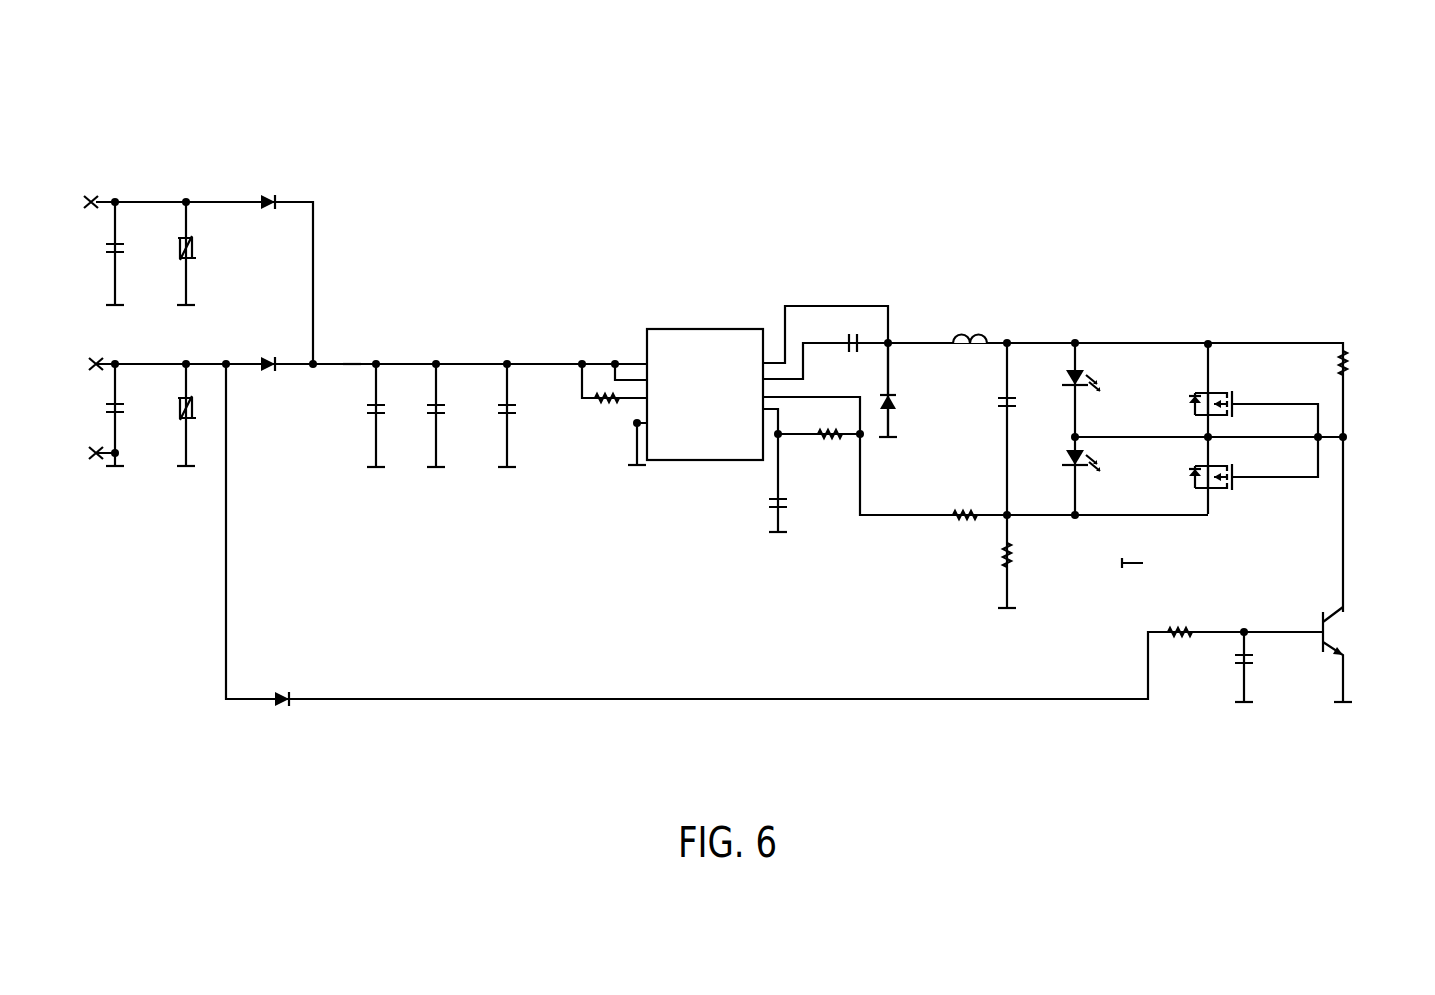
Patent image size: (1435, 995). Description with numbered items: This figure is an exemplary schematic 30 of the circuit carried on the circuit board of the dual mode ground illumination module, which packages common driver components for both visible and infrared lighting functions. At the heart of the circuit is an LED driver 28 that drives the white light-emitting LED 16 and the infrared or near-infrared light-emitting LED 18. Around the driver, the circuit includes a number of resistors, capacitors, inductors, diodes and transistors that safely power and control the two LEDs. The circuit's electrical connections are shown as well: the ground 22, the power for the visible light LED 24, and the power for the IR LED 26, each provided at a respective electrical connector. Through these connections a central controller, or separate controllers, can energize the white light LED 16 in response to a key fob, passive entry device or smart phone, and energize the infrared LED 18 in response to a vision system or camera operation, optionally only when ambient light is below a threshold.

The schematic 30 is at (1009, 145).
The LED driver 28 is at (700, 329).
The power for the IR LED 26 is at (89, 202).
The power for the visible light LED 24 is at (95, 362).
The ground 22 is at (93, 458).
The infrared light-emitting LED 18 is at (1080, 377).
The white light-emitting LED 16 is at (1080, 457).